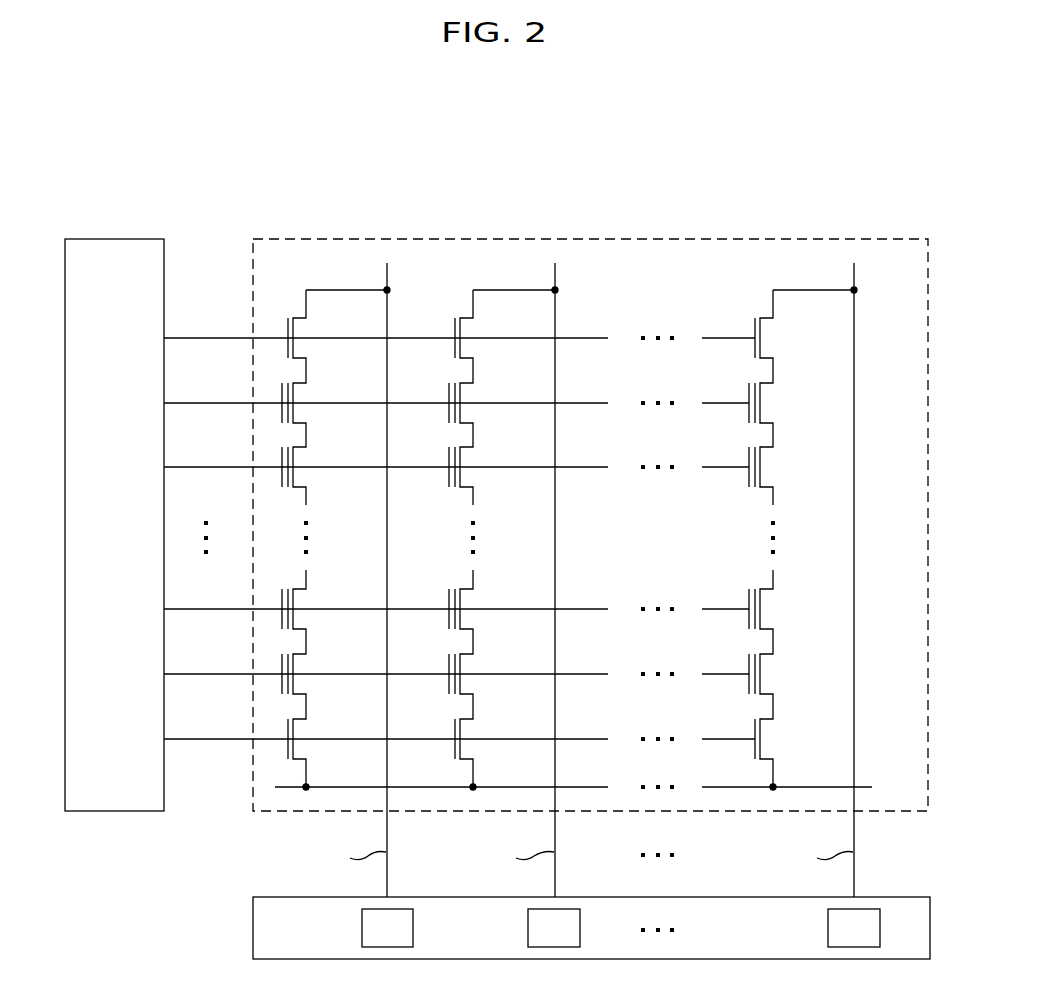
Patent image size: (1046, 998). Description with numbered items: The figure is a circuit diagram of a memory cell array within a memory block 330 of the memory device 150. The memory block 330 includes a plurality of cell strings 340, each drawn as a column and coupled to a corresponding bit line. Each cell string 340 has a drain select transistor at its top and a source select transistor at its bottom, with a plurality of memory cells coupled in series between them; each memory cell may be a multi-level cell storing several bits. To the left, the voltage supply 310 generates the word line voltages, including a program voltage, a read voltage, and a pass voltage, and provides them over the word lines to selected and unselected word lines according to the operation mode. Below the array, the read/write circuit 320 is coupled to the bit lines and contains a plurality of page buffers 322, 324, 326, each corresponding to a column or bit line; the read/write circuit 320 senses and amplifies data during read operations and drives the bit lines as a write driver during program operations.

The memory device 150 is at (902, 140).
The voltage supply 310 is at (117, 239).
The read/write circuit 320 is at (252, 926).
The page buffer 322 is at (361, 926).
The page buffer 324 is at (527, 926).
The page buffer 326 is at (827, 926).
The memory block 330 is at (816, 239).
The cell string 340 is at (291, 298).